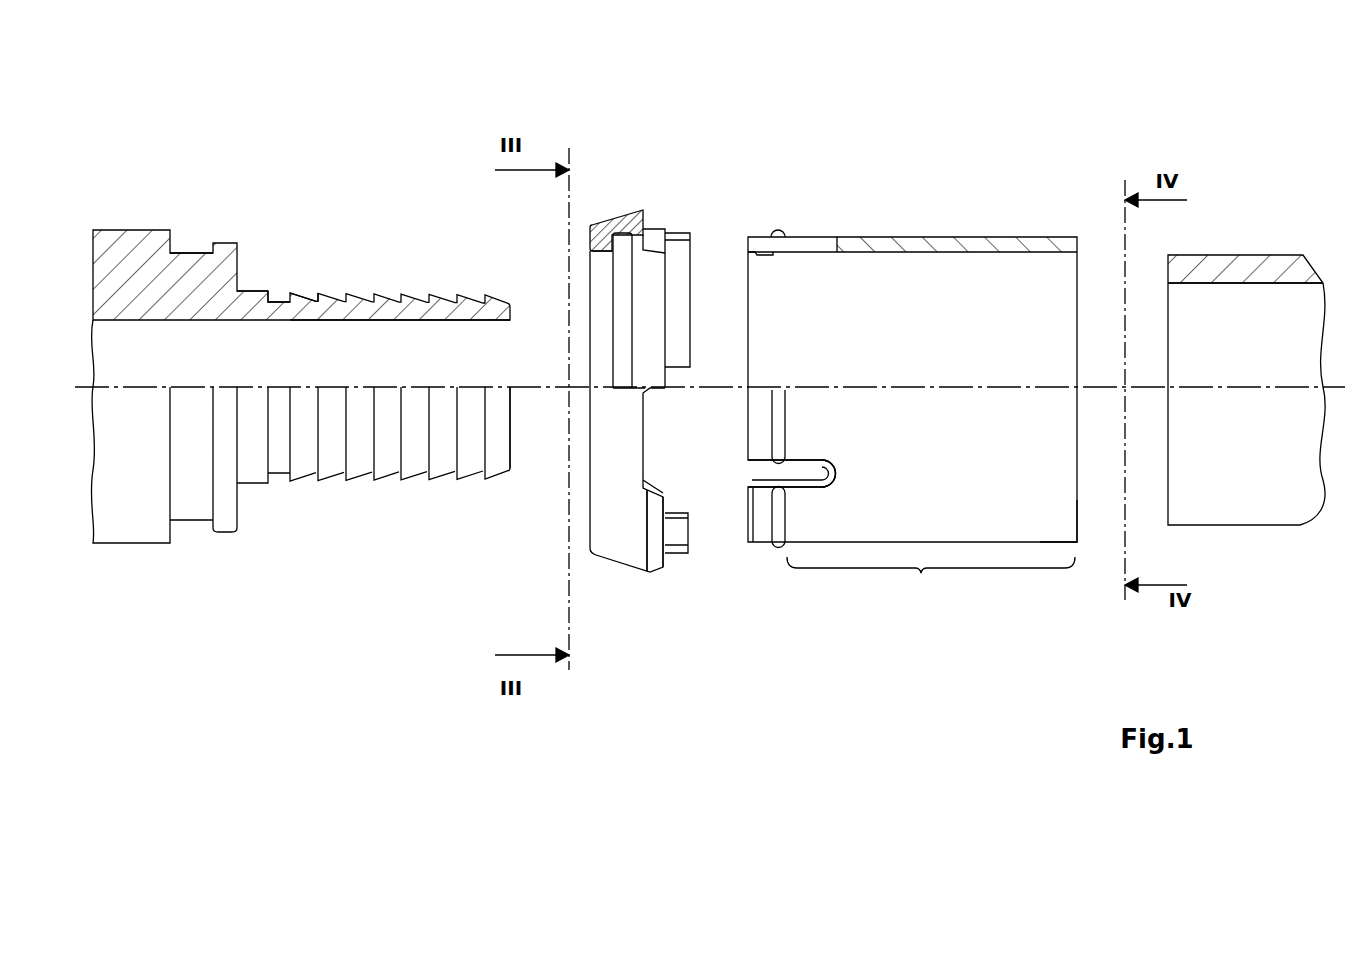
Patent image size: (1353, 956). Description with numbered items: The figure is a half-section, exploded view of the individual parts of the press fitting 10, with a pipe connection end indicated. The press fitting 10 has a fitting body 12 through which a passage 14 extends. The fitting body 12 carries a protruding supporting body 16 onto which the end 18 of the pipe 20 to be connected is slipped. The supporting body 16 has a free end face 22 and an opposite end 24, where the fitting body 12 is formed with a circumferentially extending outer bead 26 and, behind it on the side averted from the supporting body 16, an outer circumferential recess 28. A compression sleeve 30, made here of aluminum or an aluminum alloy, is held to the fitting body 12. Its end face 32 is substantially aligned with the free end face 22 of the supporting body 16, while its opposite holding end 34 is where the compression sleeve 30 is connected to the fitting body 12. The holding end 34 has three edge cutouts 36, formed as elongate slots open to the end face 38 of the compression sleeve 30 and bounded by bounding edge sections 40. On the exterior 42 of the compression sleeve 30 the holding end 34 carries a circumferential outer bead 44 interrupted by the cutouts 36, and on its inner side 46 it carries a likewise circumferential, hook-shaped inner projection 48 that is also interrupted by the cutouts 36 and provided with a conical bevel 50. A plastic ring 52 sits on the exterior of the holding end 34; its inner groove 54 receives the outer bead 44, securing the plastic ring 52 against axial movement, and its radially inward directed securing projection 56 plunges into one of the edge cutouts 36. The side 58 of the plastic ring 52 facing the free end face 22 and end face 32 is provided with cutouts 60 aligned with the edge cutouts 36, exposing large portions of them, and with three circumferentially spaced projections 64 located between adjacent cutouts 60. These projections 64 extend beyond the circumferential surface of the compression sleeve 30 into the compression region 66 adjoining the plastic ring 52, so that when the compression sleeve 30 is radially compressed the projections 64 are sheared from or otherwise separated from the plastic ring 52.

The press fitting 10 is at (738, 128).
The fitting body 12 is at (146, 188).
The passage 14 is at (323, 353).
The supporting body 16 is at (447, 300).
The end of pipe 18 is at (1211, 231).
The pipe 20 is at (1263, 270).
The free end face 22 is at (519, 480).
The end of supporting body 24 is at (257, 280).
The outer bead 26 is at (259, 268).
The outer circumferential recess 28 is at (192, 241).
The compression sleeve 30 is at (967, 241).
The end face of compression sleeve 32 is at (1089, 549).
The holding end 34 is at (783, 224).
The edge cutouts 36 is at (802, 473).
The end face of compression sleeve at holding end 38 is at (745, 427).
The bounding edge sections 40 is at (838, 471).
The exterior of compression sleeve 42 is at (812, 234).
The outer bead of compression sleeve 44 is at (777, 233).
The inner side of compression sleeve 46 is at (798, 254).
The inner projection 48 is at (761, 256).
The conical bevel 50 is at (704, 256).
The plastic ring 52 is at (588, 238).
The inner groove 54 is at (621, 236).
The securing projection 56 is at (597, 258).
The side of plastic ring 58 is at (690, 237).
The cutouts of plastic ring 60 is at (658, 448).
The projections 64 is at (677, 327).
The compression region 66 is at (931, 581).